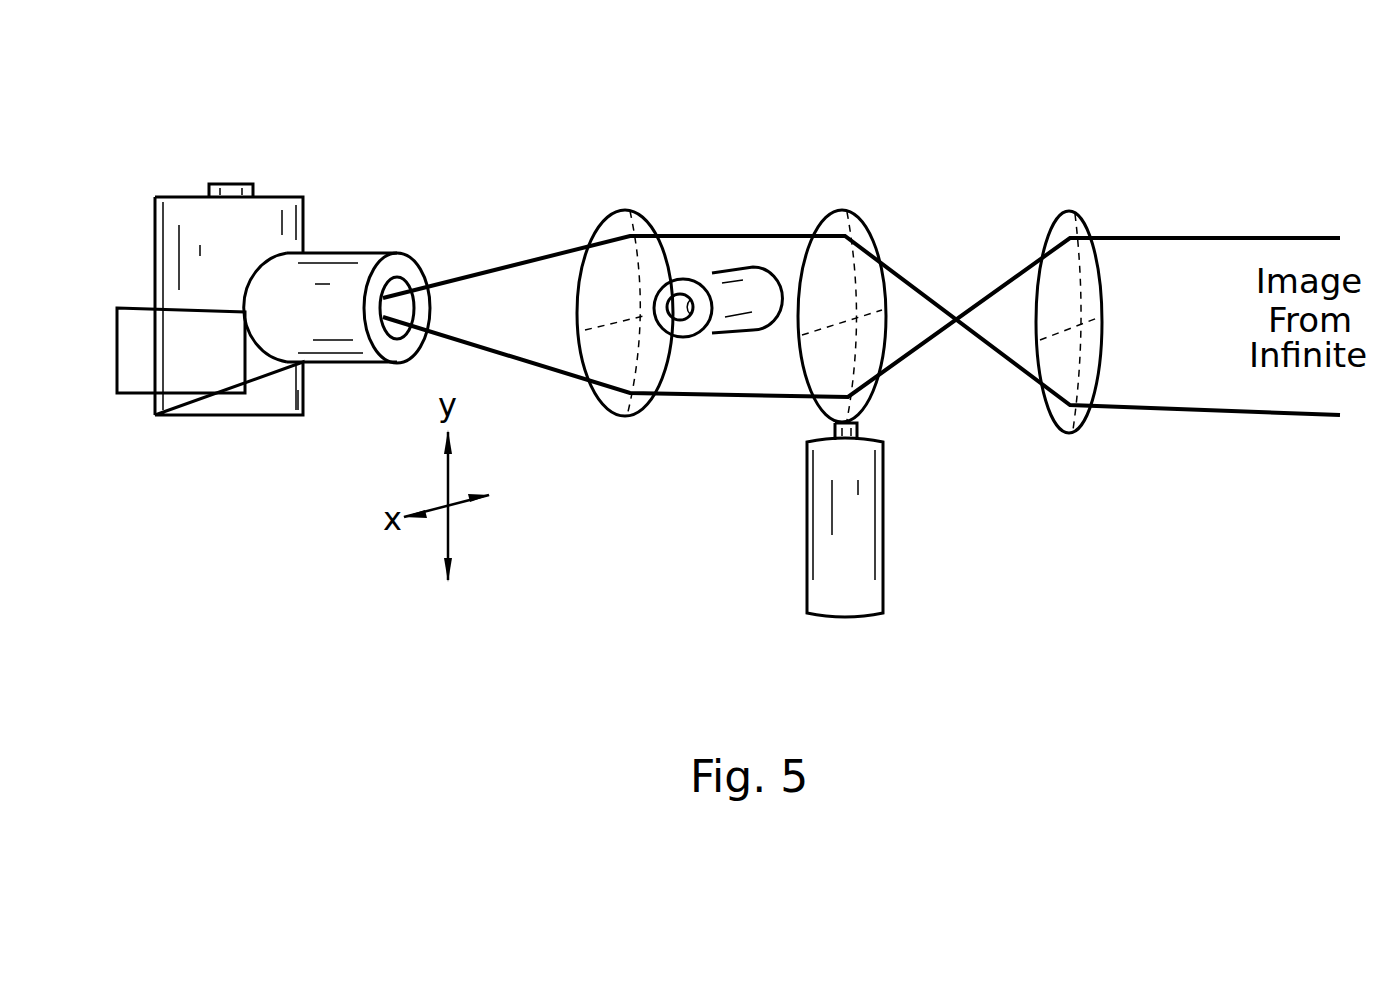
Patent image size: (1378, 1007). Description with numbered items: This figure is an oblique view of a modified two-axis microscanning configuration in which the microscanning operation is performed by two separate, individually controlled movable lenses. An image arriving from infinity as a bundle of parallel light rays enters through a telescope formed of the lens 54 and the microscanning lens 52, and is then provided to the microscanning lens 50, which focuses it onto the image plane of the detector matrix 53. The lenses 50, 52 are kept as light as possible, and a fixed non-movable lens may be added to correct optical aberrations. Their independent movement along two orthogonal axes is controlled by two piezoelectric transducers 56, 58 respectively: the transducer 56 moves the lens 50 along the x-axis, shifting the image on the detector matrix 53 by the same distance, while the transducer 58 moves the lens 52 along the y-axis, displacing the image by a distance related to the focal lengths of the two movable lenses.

The microscanning lens 50 is at (608, 326).
The microscanning lens 52 is at (850, 228).
The detector matrix 53 is at (303, 197).
The lens 54 is at (1077, 228).
The piezoelectric transducer 56 is at (723, 270).
The piezoelectric transducer 58 is at (883, 613).